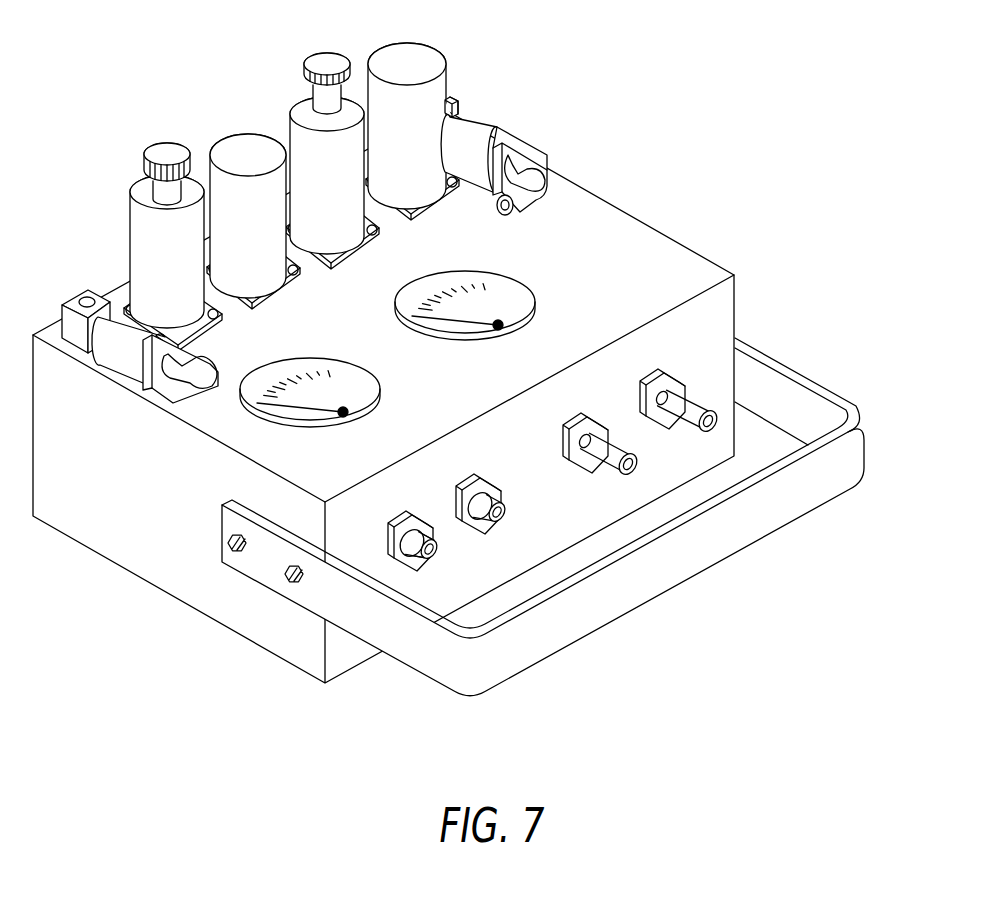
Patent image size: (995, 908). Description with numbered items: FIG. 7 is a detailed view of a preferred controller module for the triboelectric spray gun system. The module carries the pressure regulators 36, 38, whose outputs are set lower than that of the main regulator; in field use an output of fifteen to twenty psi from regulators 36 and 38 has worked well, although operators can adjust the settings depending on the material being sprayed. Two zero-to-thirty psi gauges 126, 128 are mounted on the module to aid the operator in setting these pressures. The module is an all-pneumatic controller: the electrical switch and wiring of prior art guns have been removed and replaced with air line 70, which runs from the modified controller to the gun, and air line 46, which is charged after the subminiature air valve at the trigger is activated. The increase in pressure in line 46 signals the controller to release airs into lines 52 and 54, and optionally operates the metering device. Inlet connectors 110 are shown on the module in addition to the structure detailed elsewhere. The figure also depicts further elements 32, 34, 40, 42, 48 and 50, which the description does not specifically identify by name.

The reservoir 32 is at (247, 152).
The reservoir 34 is at (397, 50).
The regulator 36 is at (158, 147).
The regulator 38 is at (317, 60).
The manifold block 40 is at (72, 320).
The fitting 42 is at (458, 99).
The air line 46 is at (690, 402).
The valve 48 is at (118, 366).
The valve 50 is at (497, 128).
The line 52 is at (80, 292).
The line 54 is at (447, 97).
The air line 70 is at (607, 458).
The inlet connectors 110 is at (494, 528).
The 0–30 psi gauge 126 is at (513, 290).
The 0–30 psi gauge 128 is at (345, 372).